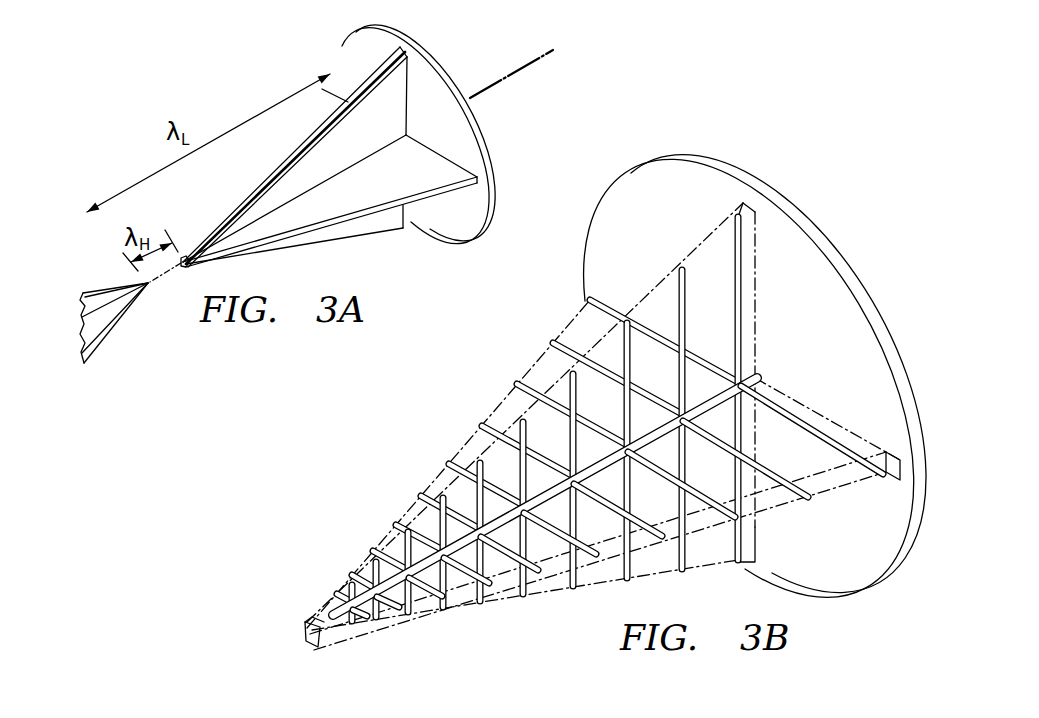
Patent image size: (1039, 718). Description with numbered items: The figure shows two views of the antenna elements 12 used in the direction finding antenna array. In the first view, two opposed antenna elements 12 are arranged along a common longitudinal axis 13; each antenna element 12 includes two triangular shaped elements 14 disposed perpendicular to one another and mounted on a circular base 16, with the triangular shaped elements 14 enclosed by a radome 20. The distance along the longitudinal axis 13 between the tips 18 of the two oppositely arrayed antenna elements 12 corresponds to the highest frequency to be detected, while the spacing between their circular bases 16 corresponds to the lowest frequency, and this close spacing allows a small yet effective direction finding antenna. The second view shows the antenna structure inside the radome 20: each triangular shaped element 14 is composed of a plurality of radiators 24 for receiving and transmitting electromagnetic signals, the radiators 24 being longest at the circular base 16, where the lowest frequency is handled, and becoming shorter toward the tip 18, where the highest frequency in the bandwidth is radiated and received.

In FIG. 3A, the antenna element 12 is at (262, 92).
In FIG. 3B, the antenna element 12 is at (858, 206).
In FIG. 3A, the longitudinal axis 13 is at (507, 74).
In FIG. 3A, the triangular shaped element 14 is at (384, 134).
In FIG. 3A, the circular base 16 is at (447, 128).
In FIG. 3B, the circular base 16 is at (828, 353).
In FIG. 3B, the tip 18 is at (305, 633).
In FIG. 3A, the radome 20 is at (337, 208).
In FIG. 3B, the radome 20 is at (493, 603).
In FIG. 3B, the radiator 24 is at (517, 468).